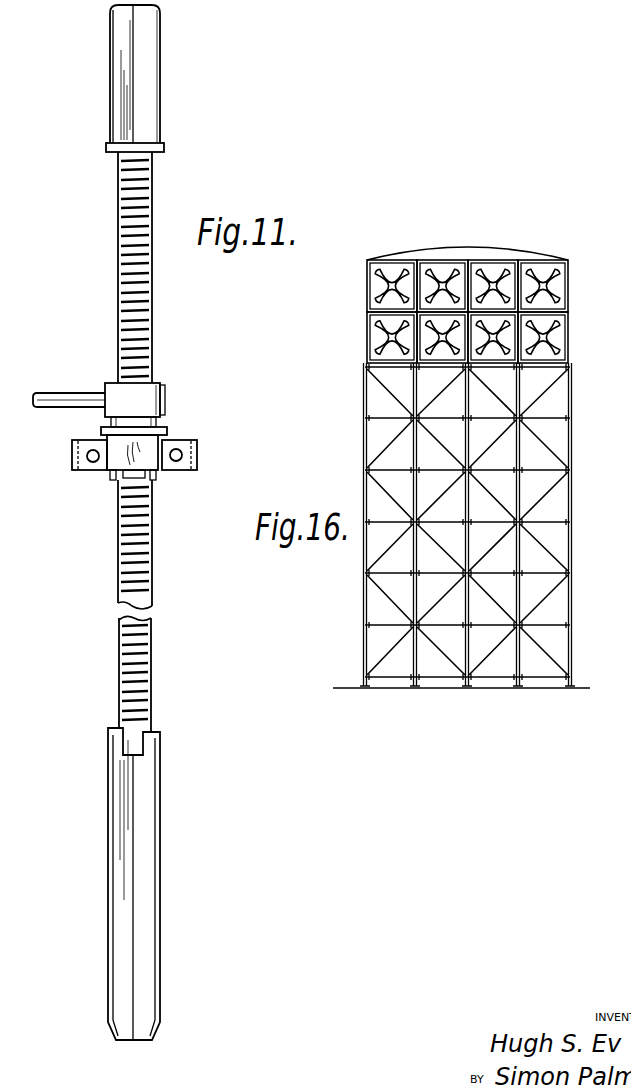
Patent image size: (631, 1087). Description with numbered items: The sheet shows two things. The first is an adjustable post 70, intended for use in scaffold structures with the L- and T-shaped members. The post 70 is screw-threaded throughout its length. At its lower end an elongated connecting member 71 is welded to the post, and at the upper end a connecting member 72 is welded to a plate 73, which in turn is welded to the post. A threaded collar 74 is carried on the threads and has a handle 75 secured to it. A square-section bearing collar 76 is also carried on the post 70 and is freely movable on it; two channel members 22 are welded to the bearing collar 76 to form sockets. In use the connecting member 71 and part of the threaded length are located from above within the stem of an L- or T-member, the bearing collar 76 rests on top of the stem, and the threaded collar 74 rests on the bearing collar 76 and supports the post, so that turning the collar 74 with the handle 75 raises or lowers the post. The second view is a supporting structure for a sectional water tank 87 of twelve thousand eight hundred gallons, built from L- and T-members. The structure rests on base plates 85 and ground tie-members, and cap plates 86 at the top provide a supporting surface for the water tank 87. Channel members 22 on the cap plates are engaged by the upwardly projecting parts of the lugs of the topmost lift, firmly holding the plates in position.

In FIG. 11, the channel members 22 is at (72, 457).
In FIG. 11, the adjustable post 70 is at (118, 286).
In FIG. 11, the elongated connecting member 71 is at (117, 827).
In FIG. 11, the connecting member 72 is at (145, 100).
In FIG. 11, the plate 73 is at (165, 148).
In FIG. 11, the threaded collar 74 is at (165, 400).
In FIG. 11, the handle 75 is at (58, 412).
In FIG. 11, the bearing collar 76 is at (170, 436).
In FIG. 16, the base plates 85 is at (362, 684).
In FIG. 16, the cap plates 86 is at (367, 370).
In FIG. 16, the water tank 87 is at (372, 331).